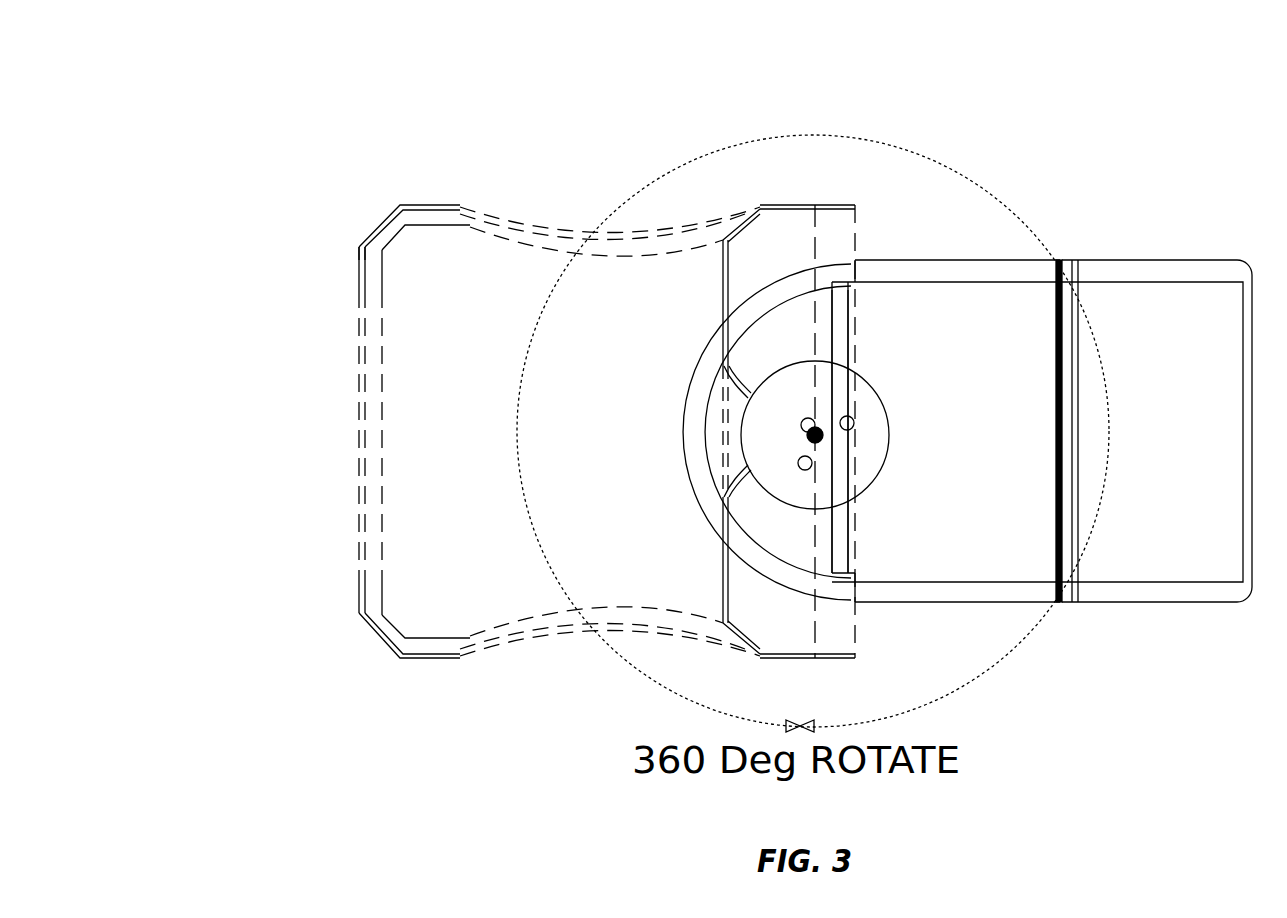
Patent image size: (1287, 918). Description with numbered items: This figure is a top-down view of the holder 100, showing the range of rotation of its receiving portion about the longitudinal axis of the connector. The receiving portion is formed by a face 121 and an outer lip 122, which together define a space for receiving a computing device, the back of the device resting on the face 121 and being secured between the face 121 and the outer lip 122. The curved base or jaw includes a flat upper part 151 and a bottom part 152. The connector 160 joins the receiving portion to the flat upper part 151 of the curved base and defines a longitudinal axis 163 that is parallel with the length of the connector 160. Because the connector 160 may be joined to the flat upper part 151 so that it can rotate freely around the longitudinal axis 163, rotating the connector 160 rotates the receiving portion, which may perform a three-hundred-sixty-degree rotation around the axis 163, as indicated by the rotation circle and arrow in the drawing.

The holder 100 is at (306, 320).
The face 121 is at (475, 252).
The outer lip 122 is at (783, 238).
The flat upper part 151 is at (980, 323).
The bottom part 152 is at (1132, 322).
The connector 160 is at (866, 427).
The longitudinal axis 163 is at (814, 445).